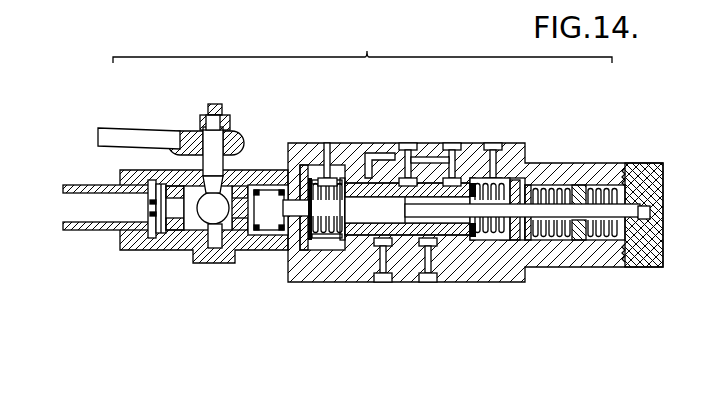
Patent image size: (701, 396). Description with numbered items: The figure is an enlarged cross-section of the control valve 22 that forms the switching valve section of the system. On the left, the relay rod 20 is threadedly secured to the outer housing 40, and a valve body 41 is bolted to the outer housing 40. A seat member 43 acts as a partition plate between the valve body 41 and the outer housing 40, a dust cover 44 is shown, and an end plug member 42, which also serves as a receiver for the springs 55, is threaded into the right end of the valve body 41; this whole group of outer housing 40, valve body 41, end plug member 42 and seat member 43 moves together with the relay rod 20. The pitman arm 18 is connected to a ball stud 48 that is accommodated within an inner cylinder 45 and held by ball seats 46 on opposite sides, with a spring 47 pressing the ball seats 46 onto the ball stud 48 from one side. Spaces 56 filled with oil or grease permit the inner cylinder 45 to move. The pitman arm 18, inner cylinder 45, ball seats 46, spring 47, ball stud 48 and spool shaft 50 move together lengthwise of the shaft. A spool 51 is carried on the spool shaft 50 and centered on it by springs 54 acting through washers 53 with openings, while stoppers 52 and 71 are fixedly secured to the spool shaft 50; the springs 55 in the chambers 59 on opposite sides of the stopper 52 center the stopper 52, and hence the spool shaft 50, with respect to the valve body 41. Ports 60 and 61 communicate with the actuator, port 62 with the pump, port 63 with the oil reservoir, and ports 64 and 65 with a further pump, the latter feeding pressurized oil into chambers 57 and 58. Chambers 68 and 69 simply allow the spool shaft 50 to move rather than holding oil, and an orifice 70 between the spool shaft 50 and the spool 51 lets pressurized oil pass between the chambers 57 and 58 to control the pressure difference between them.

The pitman arm 18 is at (113, 129).
The relay rod 20 is at (88, 185).
The control valve 22 is at (362, 44).
The outer housing 40 is at (262, 260).
The valve body 41 is at (368, 282).
The end plug member 42 is at (648, 267).
The seat member 43 is at (304, 276).
The dust cover 44 is at (145, 250).
The inner cylinder 45 is at (176, 250).
The ball seats 46 is at (190, 258).
The spring 47 is at (258, 190).
The ball stud 48 is at (212, 105).
The spool shaft 50 is at (470, 283).
The spool 51 is at (456, 262).
The stopper 52 is at (567, 267).
The washers 53 is at (337, 283).
The springs 54 is at (319, 245).
The springs 55 is at (578, 185).
The spaces 56 is at (158, 250).
The chamber 57 is at (314, 143).
The chamber 58 is at (507, 178).
The chambers 59 is at (551, 186).
The port 60 is at (393, 262).
The port 61 is at (432, 262).
The port 62 is at (449, 143).
The port 63 is at (407, 143).
The port 64 is at (331, 143).
The port 65 is at (493, 143).
The chamber 68 is at (309, 283).
The chamber 69 is at (526, 267).
The orifice 70 is at (385, 143).
The stopper 71 is at (303, 165).